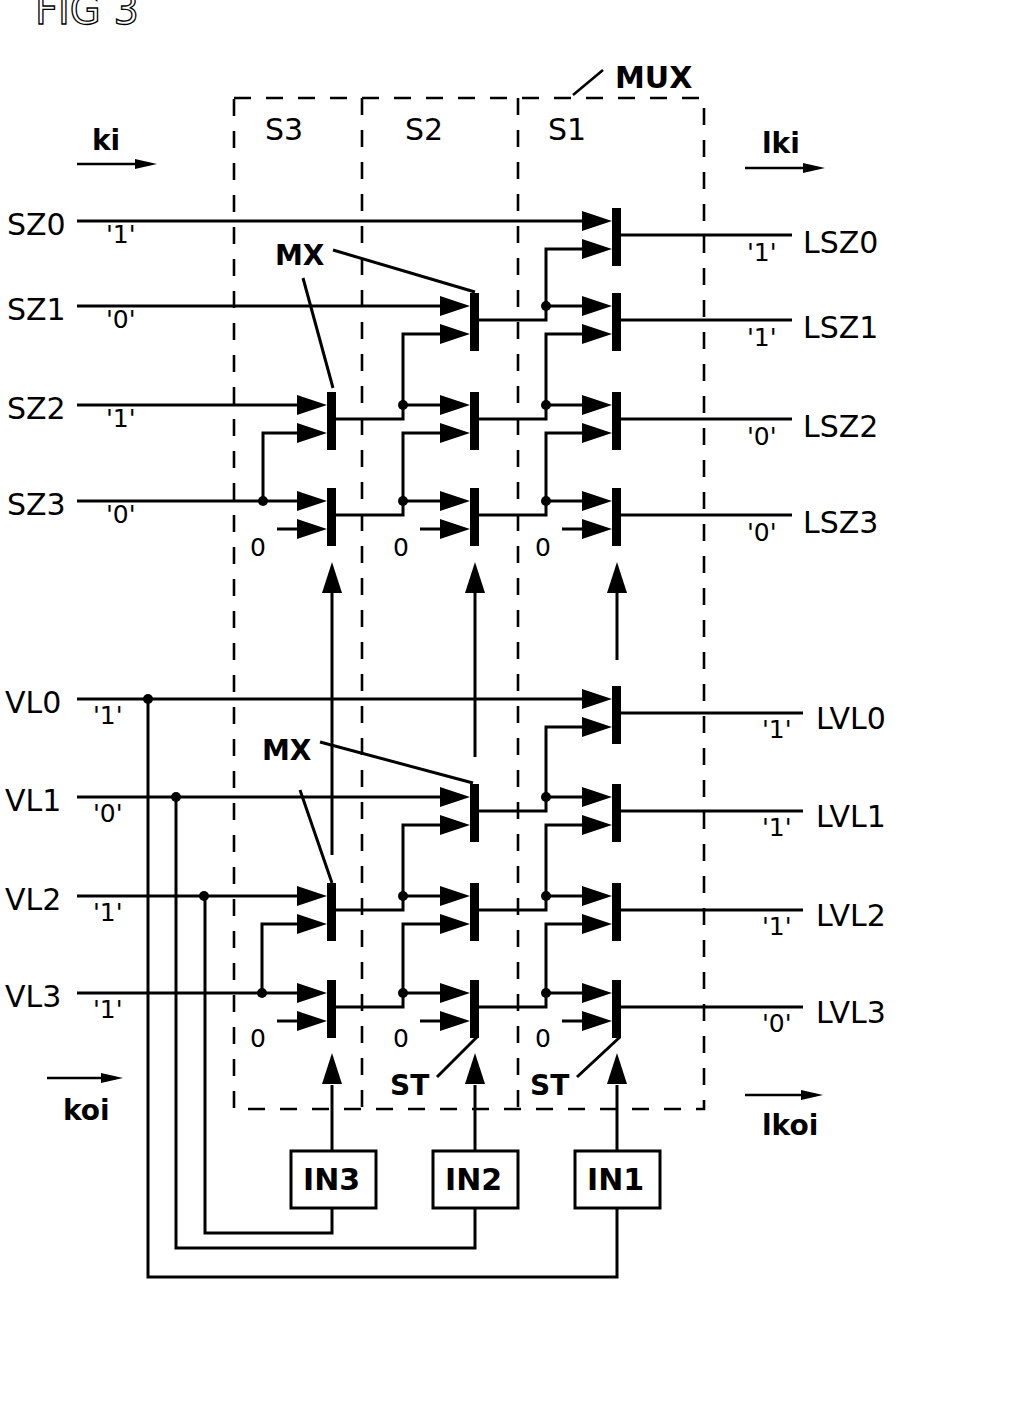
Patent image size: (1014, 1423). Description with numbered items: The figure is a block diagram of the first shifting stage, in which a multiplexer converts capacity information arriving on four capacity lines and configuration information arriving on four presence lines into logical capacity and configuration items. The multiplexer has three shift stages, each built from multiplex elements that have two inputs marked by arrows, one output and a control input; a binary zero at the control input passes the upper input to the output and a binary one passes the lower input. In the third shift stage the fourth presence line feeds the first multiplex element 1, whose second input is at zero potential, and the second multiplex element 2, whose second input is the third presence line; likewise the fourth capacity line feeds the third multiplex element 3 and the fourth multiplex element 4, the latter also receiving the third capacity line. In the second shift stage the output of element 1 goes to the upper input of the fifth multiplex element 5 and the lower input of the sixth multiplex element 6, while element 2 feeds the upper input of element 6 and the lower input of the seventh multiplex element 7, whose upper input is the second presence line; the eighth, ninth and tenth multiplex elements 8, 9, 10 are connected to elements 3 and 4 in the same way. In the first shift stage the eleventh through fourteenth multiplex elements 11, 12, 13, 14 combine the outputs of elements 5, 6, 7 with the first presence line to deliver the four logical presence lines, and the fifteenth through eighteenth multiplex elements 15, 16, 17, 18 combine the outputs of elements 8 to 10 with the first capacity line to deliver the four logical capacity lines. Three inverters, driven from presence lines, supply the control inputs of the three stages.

The first multiplex element 1 is at (341, 1005).
The second multiplex element 2 is at (341, 908).
The third multiplex element 3 is at (341, 513).
The fourth multiplex element 4 is at (341, 417).
The fifth multiplex element 5 is at (484, 1005).
The sixth multiplex element 6 is at (484, 908).
The seventh multiplex element 7 is at (484, 809).
The eighth multiplex element 8 is at (484, 513).
The ninth multiplex element 9 is at (484, 417).
The tenth multiplex element 10 is at (485, 302).
The eleventh multiplex element 11 is at (634, 1005).
The twelfth multiplex element 12 is at (634, 908).
The thirteenth multiplex element 13 is at (634, 809).
The fourteenth multiplex element 14 is at (634, 711).
The fifteenth multiplex element 15 is at (634, 513).
The sixteenth multiplex element 16 is at (634, 417).
The seventeenth multiplex element 17 is at (634, 318).
The eighteenth multiplex element 18 is at (634, 233).